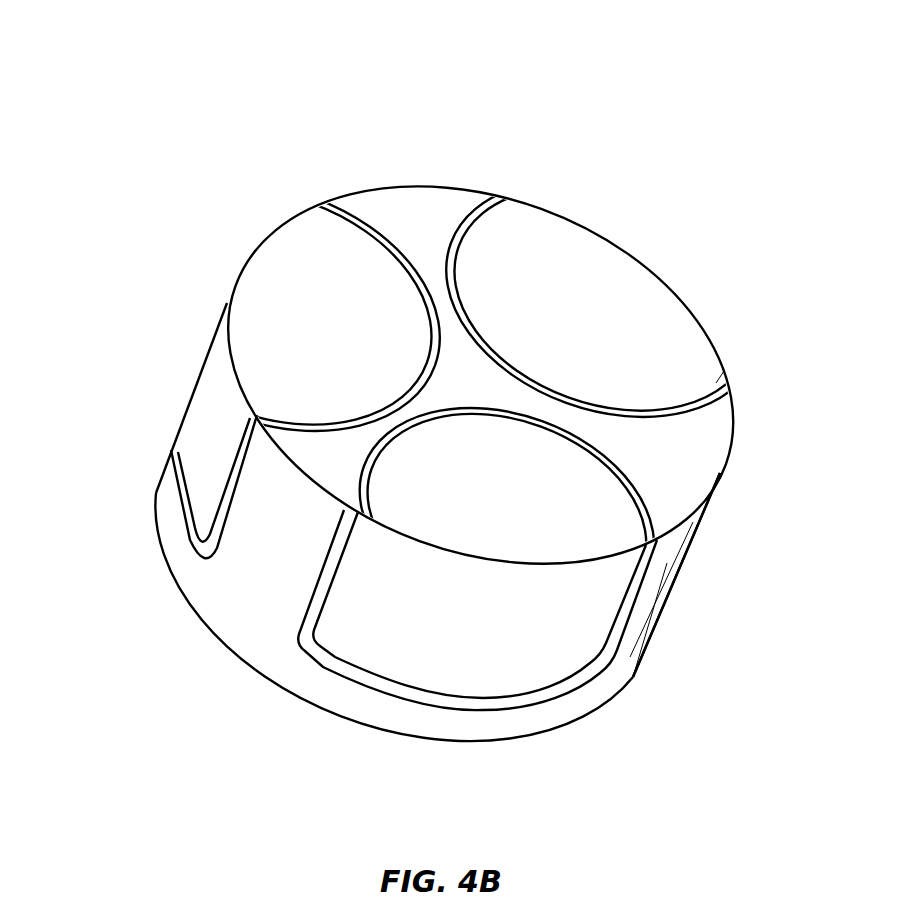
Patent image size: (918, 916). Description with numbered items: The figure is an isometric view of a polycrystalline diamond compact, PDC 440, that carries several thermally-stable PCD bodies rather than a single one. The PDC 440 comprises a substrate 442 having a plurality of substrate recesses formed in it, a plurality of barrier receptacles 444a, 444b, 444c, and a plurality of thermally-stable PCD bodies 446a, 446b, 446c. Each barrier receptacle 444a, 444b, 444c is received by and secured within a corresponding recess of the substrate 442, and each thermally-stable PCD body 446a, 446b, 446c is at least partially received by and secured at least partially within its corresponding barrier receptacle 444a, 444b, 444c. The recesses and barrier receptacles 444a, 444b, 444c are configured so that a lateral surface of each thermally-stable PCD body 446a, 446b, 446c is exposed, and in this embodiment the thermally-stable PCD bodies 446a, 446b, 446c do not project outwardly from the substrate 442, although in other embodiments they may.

The PDC 440 is at (620, 91).
The substrate 442 is at (657, 643).
The barrier receptacle 444a is at (715, 388).
The barrier receptacle 444b is at (305, 427).
The barrier receptacle 444c is at (637, 493).
The thermally-stable PCD body 446a is at (597, 290).
The thermally-stable PCD body 446b is at (300, 310).
The thermally-stable PCD body 446c is at (587, 520).